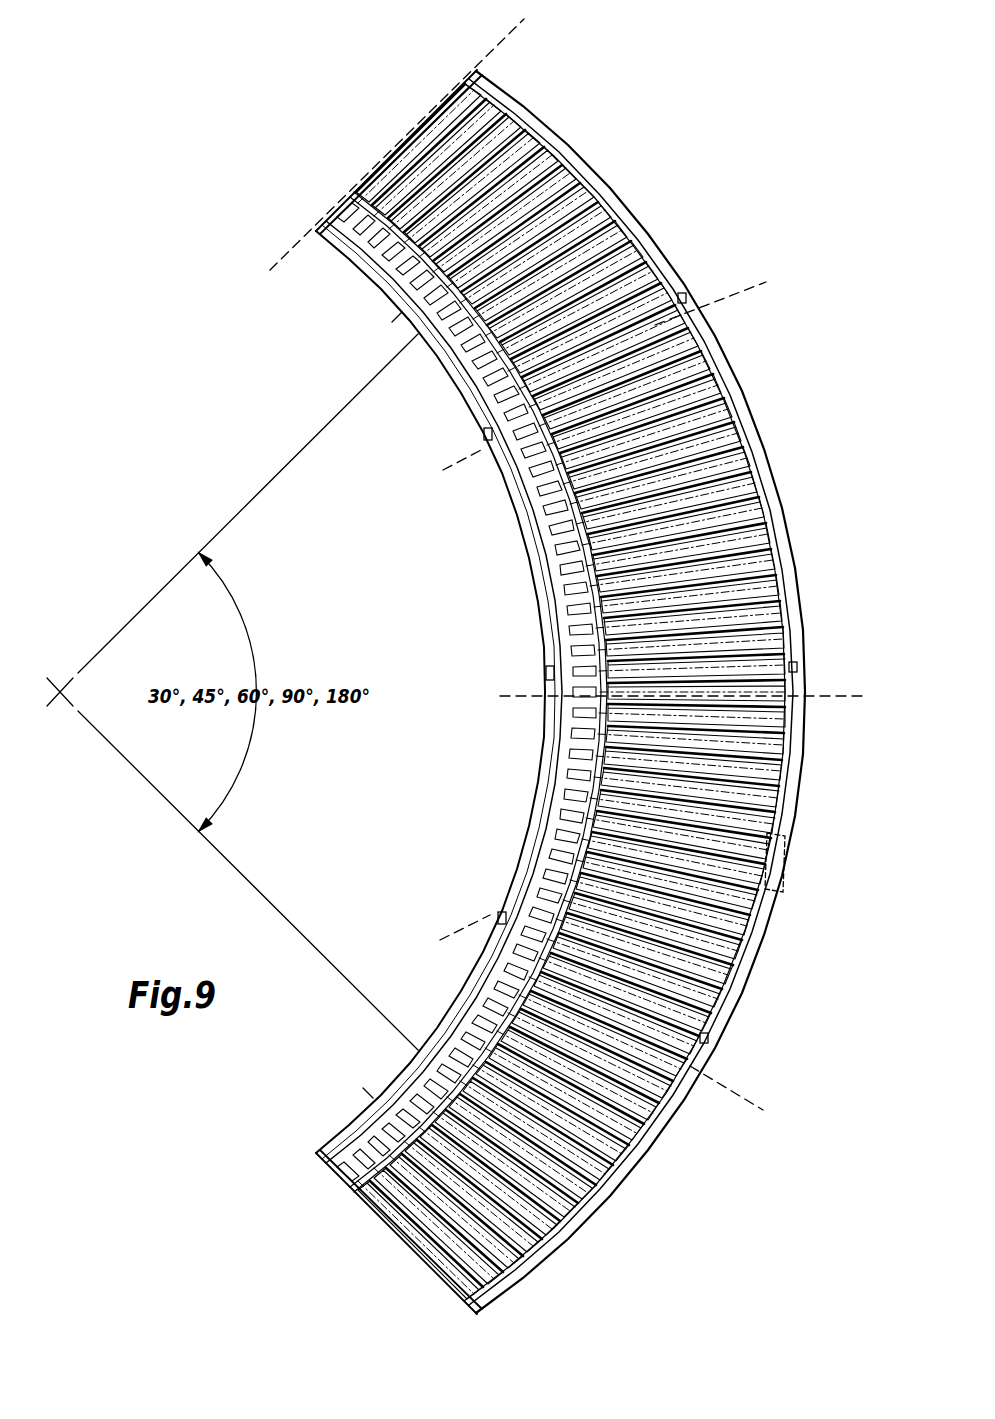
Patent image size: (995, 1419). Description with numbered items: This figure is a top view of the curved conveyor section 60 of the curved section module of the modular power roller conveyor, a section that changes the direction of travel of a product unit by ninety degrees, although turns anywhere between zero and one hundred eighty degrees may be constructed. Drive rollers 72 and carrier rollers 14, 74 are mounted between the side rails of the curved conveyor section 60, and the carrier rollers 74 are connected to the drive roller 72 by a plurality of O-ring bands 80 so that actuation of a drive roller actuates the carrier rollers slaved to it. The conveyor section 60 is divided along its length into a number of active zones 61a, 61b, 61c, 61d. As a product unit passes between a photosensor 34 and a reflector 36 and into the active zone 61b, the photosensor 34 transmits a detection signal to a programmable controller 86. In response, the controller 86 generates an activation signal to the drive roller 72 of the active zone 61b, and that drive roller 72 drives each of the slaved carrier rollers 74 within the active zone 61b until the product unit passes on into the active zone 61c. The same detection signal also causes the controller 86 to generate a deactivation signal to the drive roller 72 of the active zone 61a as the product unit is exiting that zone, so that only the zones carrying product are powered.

The curved conveyor section 60 is at (341, 120).
The carrier roller 14 is at (537, 130).
The drive roller 72 is at (584, 160).
The carrier roller 74 is at (657, 240).
The photosensor 34 is at (686, 298).
The reflector 36 is at (482, 434).
The O-ring band 80 is at (392, 322).
The controller 86 is at (788, 870).
The active zone 61a is at (413, 135).
The active zone 61b is at (624, 366).
The active zone 61c is at (702, 697).
The active zone 61d is at (620, 1021).